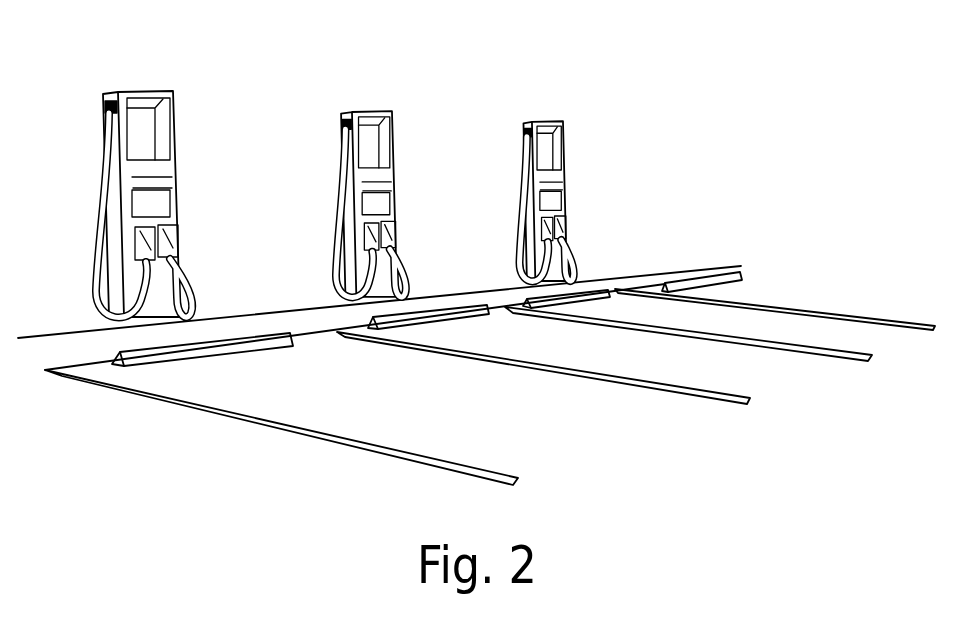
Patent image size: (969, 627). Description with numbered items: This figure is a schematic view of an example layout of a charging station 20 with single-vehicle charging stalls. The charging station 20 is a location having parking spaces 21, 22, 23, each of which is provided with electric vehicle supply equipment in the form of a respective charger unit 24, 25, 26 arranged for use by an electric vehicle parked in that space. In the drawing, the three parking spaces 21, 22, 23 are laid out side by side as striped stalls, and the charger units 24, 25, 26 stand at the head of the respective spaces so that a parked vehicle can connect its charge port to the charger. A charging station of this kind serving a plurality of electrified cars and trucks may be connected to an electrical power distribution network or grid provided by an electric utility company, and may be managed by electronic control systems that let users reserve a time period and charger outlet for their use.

The charging station 20 is at (760, 156).
The parking space 21 is at (338, 391).
The parking space 22 is at (546, 354).
The parking space 23 is at (676, 327).
The charger unit 24 is at (175, 125).
The charger unit 25 is at (392, 125).
The charger unit 26 is at (562, 133).